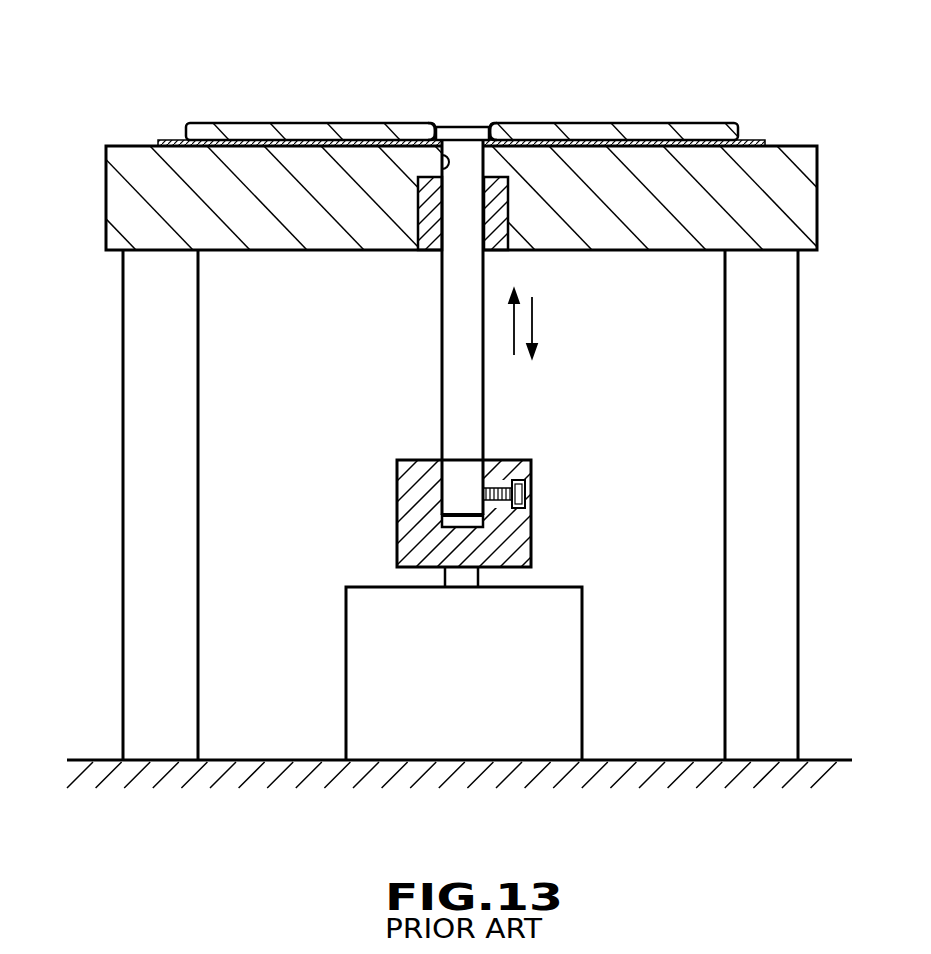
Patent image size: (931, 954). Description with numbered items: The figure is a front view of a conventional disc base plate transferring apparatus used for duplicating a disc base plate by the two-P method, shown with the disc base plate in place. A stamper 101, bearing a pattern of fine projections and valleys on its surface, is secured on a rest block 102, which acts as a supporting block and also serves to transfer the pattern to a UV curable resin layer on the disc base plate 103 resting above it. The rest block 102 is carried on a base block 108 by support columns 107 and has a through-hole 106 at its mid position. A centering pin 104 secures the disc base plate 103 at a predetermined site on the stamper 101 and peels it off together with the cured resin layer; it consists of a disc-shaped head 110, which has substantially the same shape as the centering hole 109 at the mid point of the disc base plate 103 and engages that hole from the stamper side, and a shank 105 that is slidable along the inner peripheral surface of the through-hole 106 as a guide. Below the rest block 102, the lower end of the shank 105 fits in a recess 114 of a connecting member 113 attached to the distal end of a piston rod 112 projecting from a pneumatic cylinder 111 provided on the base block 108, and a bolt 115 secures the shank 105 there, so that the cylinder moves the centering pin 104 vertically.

The stamper 101 is at (170, 140).
The rest block 102 is at (107, 198).
The disc base plate 103 is at (600, 123).
The centering pin 104 is at (520, 56).
The shank 105 is at (452, 150).
The through-hole 106 is at (423, 133).
The support columns 107 is at (137, 427).
The base block 108 is at (102, 760).
The centering hole 109 is at (485, 128).
The disc-shaped head 110 is at (470, 133).
The pneumatic cylinder 111 is at (582, 660).
The piston rod 112 is at (477, 572).
The connecting member 113 is at (532, 508).
The recess 114 is at (448, 470).
The bolt 115 is at (527, 490).